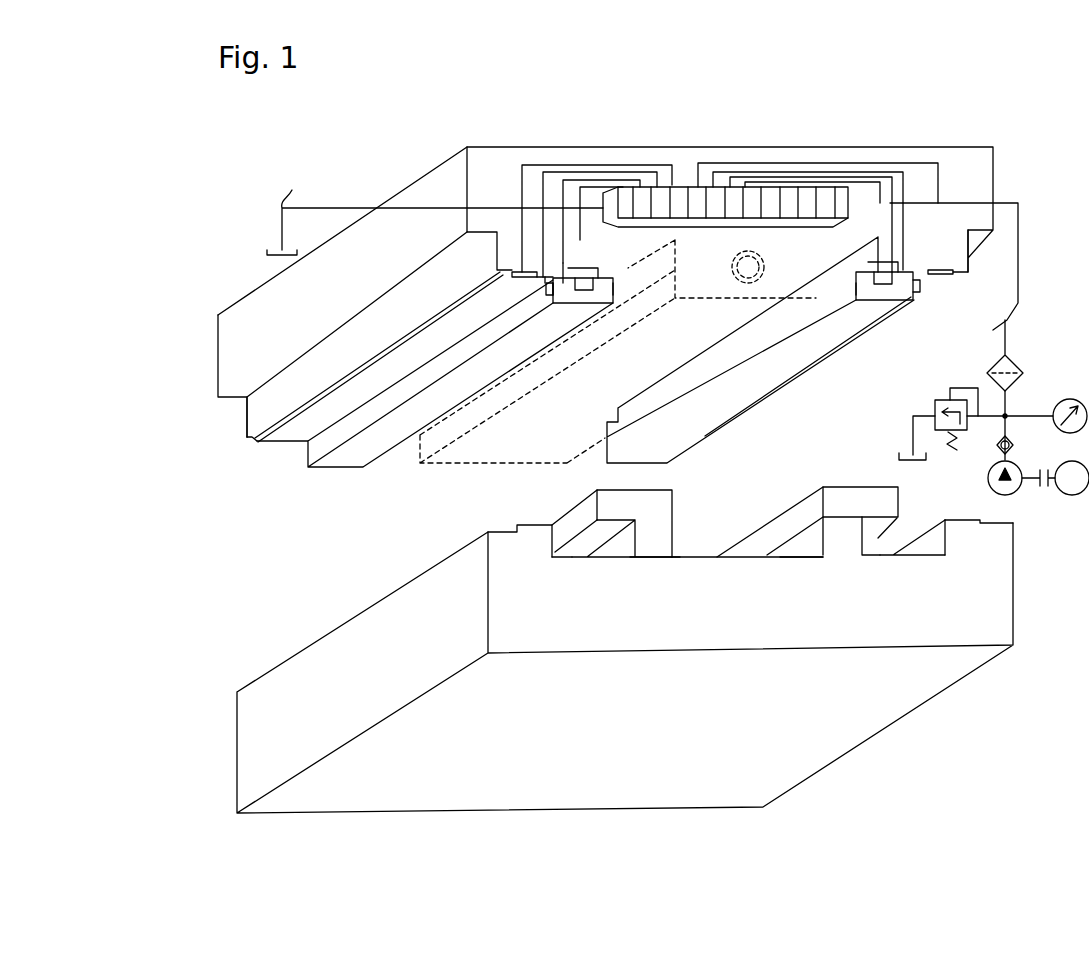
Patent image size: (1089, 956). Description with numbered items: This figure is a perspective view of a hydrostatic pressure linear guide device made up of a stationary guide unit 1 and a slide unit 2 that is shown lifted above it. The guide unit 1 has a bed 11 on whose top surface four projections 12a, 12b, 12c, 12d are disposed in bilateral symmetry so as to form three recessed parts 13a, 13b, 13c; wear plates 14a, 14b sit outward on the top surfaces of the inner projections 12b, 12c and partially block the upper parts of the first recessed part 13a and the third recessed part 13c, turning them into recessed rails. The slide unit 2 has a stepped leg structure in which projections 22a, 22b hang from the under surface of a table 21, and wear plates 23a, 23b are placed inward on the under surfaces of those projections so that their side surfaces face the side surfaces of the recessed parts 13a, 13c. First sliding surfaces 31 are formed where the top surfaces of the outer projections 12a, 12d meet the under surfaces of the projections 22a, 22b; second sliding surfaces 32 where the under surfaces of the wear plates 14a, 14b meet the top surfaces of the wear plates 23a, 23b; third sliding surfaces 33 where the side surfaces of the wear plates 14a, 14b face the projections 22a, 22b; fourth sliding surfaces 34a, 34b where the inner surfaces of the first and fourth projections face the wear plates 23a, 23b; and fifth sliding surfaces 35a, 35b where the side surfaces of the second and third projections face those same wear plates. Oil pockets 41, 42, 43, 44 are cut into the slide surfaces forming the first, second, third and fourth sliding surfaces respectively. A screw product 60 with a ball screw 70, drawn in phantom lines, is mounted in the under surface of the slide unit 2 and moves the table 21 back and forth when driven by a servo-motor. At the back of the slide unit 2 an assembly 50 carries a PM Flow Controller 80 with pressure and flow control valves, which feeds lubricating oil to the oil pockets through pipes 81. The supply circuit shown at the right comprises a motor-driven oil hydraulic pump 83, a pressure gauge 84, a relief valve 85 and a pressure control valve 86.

The guide unit 1 is at (263, 670).
The slide unit 2 is at (418, 173).
The bed 11 is at (1003, 611).
The first projection 12a is at (1003, 548).
The second projection 12b is at (822, 540).
The third projection 12c is at (672, 540).
The fourth projection 12d is at (527, 523).
The first recessed part 13a is at (878, 555).
The second recessed part 13b is at (757, 520).
The third recessed part 13c is at (583, 540).
The wear plate 14a is at (860, 486).
The wear plate 14b is at (670, 495).
The table 21 is at (218, 358).
The projection 22a is at (968, 258).
The projection 22b is at (247, 410).
The wear plate 23a is at (905, 312).
The wear plate 23b is at (307, 463).
The first sliding surface 31 is at (270, 440).
The second sliding surface 32 is at (617, 273).
The third sliding surface 33 is at (590, 263).
The fourth sliding surface 34a is at (927, 557).
The fourth sliding surface 34b is at (562, 560).
The fifth sliding surface 35a is at (863, 557).
The fifth sliding surface 35b is at (630, 553).
The oil pocket 41 is at (508, 270).
The oil pocket 42 is at (610, 277).
The oil pocket 43 is at (578, 265).
The oil pocket 44 is at (563, 270).
The actuator unit 50 is at (762, 97).
The screw product 60 is at (455, 463).
The ball screw 70 is at (770, 267).
The PM Flow Controller 80 is at (818, 203).
The pipes 81 is at (521, 268).
The oil hydraulic pump 83 is at (1015, 462).
The pressure gauge 84 is at (1070, 399).
The relief valve 85 is at (957, 440).
The pressure control valve 86 is at (1018, 365).